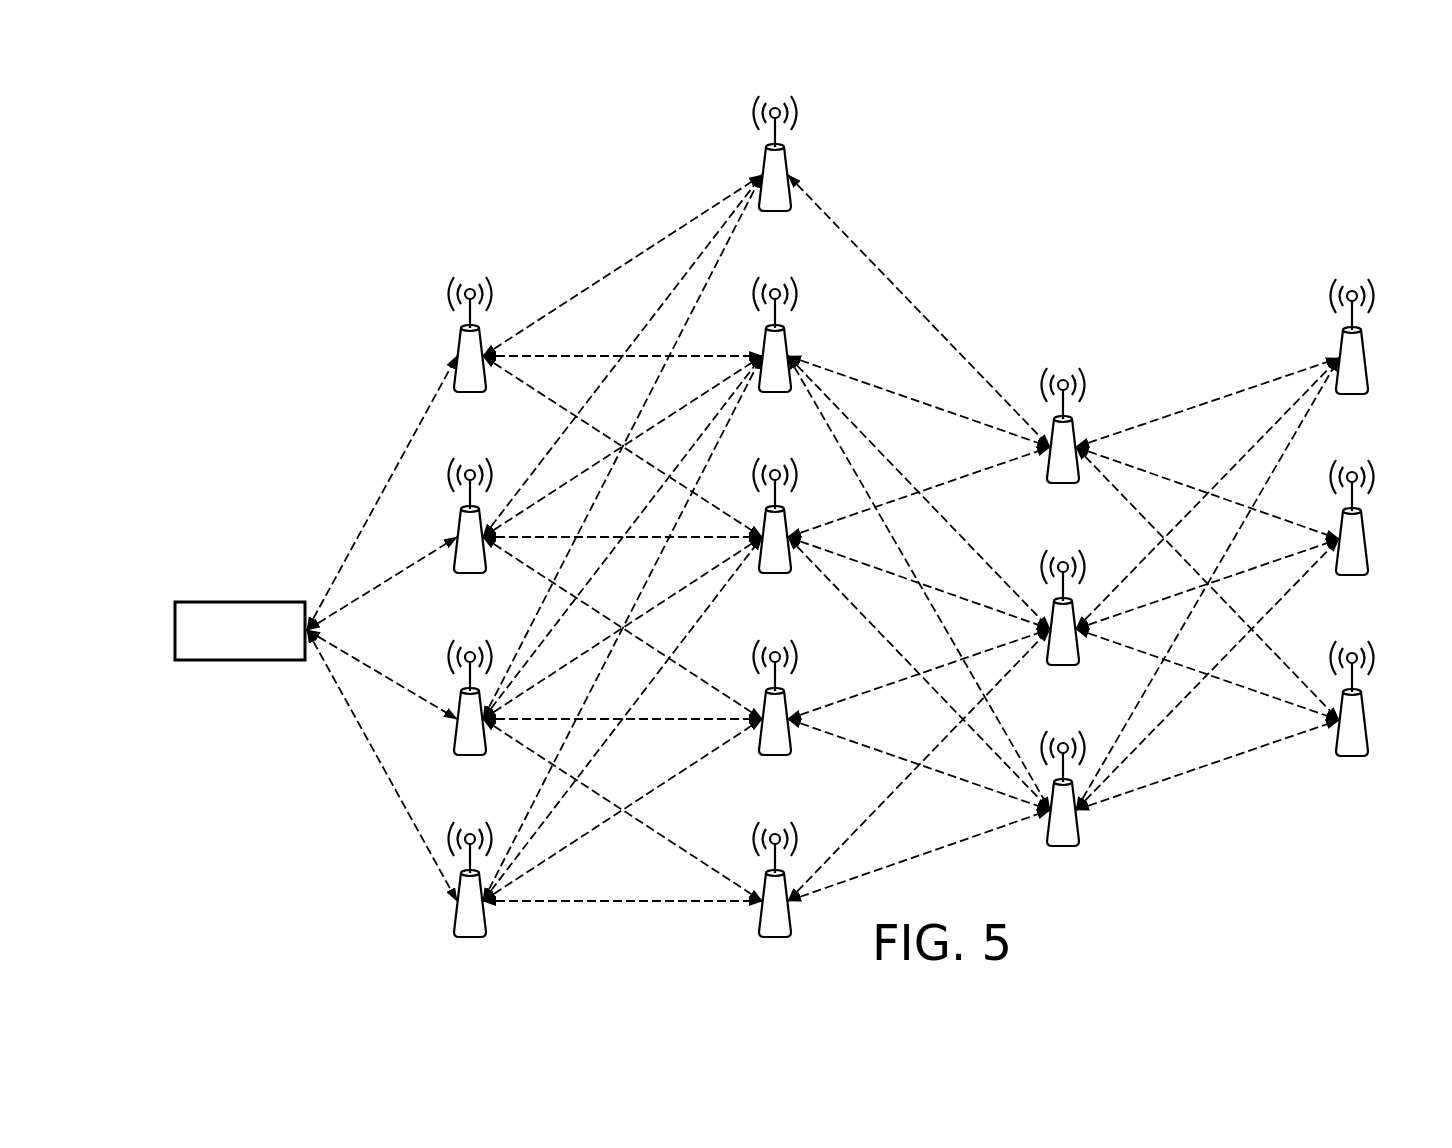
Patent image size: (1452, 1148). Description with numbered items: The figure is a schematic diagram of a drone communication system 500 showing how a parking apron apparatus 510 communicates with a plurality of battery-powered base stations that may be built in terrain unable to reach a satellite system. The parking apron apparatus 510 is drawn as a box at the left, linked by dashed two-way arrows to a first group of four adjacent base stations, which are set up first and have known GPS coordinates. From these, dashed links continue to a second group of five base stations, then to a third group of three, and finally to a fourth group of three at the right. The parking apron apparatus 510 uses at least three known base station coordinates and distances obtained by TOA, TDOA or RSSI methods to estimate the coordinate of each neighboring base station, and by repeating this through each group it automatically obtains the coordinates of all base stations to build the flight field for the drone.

The drone communication system 500 is at (1352, 918).
The parking apron apparatus 510 is at (240, 602).